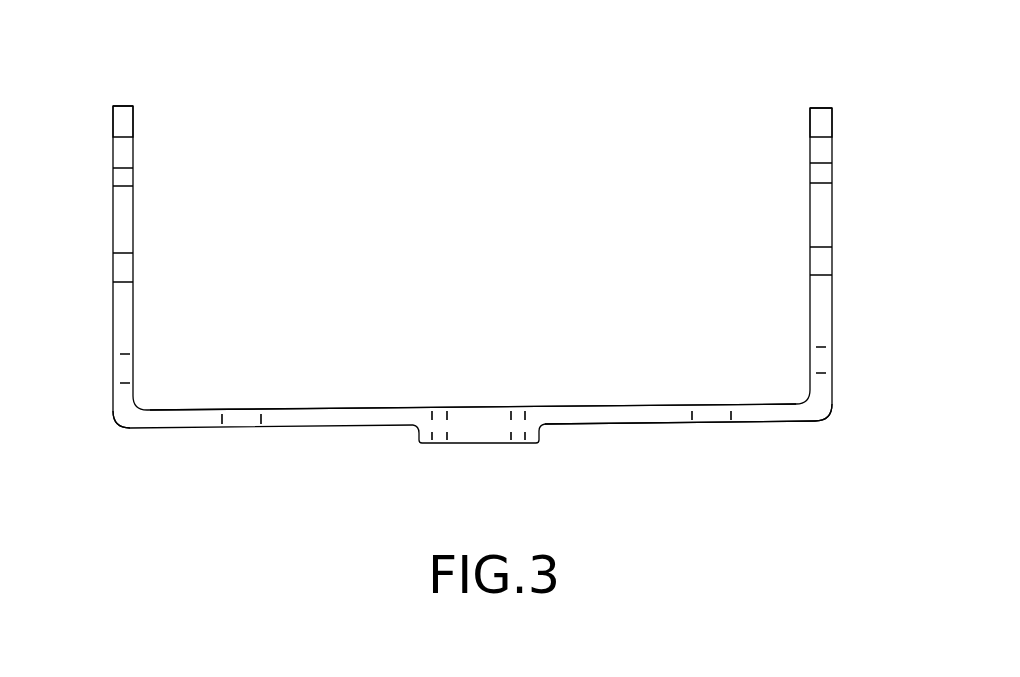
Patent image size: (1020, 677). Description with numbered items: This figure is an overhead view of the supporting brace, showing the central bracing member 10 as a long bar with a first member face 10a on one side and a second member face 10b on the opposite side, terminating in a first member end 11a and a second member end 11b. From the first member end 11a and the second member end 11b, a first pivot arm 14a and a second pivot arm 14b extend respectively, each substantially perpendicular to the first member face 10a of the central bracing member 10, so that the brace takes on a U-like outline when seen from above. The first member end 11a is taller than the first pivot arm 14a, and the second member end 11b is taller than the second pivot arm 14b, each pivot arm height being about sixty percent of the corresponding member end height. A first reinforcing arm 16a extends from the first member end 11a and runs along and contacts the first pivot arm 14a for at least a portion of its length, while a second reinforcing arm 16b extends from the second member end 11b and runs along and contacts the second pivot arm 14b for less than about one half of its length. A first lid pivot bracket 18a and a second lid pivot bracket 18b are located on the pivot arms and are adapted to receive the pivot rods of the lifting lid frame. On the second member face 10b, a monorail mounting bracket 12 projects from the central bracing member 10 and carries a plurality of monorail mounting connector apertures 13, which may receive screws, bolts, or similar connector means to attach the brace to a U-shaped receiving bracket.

The central bracing member 10 is at (317, 440).
The first member face 10a is at (372, 410).
The second member face 10b is at (616, 430).
The first member end 11a is at (112, 440).
The second member end 11b is at (836, 430).
The monorail mounting bracket 12 is at (480, 445).
The monorail mounting connector apertures 13 is at (518, 445).
The first pivot arm 14a is at (133, 123).
The second pivot arm 14b is at (808, 122).
The first reinforcing arm 16a is at (117, 340).
The second reinforcing arm 16b is at (832, 332).
The first lid pivot bracket 18a is at (123, 150).
The second lid pivot bracket 18b is at (815, 153).